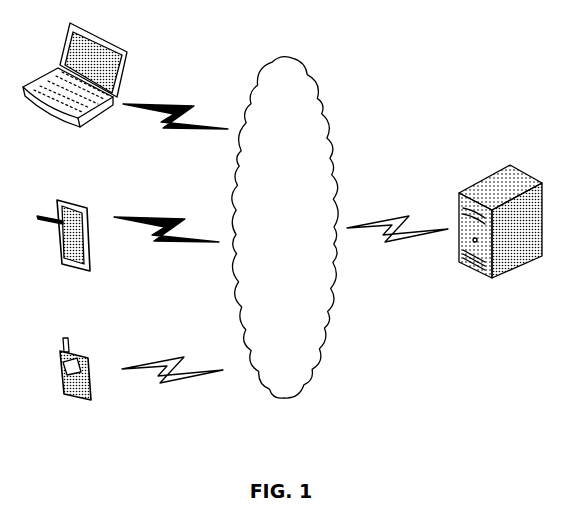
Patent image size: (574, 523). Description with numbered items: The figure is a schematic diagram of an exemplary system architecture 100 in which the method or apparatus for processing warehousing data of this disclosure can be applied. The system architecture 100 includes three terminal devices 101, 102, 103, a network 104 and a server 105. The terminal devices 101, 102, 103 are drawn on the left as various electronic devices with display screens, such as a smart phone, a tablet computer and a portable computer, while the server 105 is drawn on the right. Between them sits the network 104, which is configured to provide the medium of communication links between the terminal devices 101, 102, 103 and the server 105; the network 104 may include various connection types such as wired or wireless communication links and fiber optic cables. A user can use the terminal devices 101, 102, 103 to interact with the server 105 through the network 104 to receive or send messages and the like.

The system architecture 100 is at (477, 20).
The terminal device 101 is at (77, 384).
The terminal device 102 is at (64, 250).
The terminal device 103 is at (75, 88).
The network 104 is at (285, 228).
The server 105 is at (500, 237).